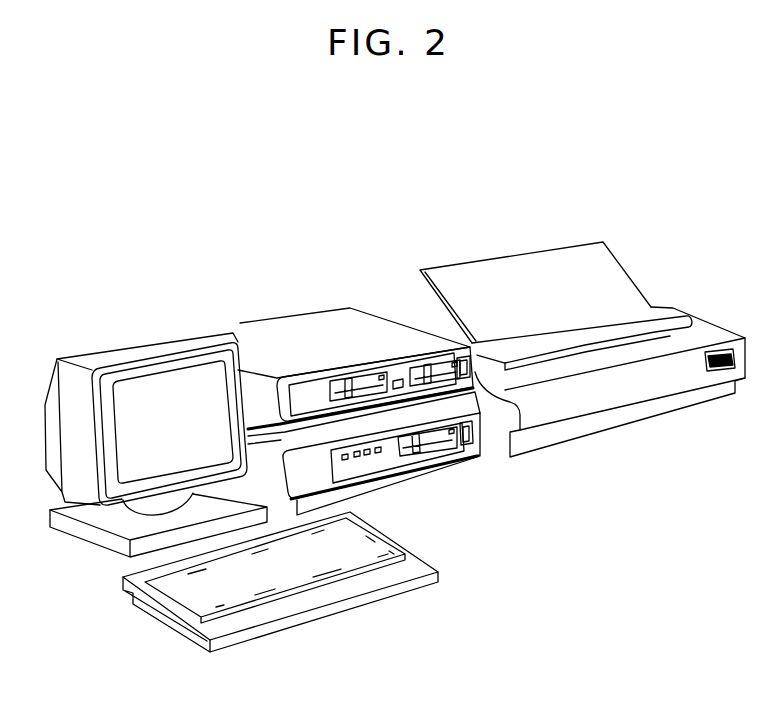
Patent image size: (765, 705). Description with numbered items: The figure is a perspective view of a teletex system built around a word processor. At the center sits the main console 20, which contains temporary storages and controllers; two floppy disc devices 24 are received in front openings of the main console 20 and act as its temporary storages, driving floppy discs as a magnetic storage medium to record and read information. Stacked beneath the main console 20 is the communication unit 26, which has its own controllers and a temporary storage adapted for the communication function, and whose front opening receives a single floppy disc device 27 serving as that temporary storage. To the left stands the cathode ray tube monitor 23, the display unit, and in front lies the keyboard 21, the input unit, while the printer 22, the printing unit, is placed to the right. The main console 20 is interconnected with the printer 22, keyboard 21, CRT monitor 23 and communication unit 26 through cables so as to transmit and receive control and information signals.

The main console 20 is at (283, 331).
The keyboard 21 is at (192, 622).
The printer 22 is at (707, 333).
The cathode ray tube (CRT) monitor 23 is at (73, 417).
The floppy disc devices 24 is at (408, 352).
The communication unit 26 is at (402, 476).
The floppy disc device 27 is at (450, 450).